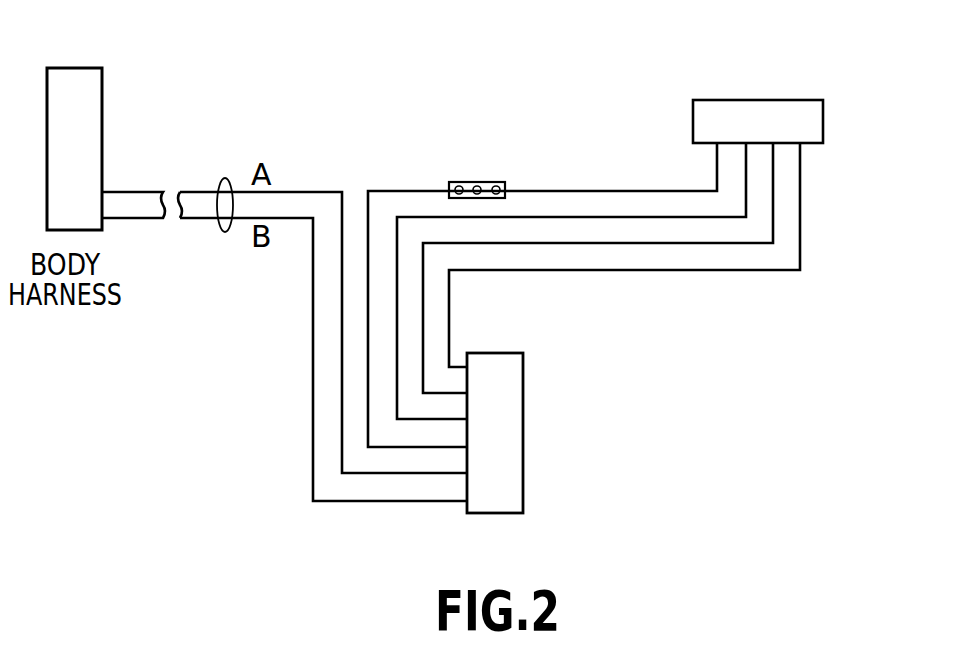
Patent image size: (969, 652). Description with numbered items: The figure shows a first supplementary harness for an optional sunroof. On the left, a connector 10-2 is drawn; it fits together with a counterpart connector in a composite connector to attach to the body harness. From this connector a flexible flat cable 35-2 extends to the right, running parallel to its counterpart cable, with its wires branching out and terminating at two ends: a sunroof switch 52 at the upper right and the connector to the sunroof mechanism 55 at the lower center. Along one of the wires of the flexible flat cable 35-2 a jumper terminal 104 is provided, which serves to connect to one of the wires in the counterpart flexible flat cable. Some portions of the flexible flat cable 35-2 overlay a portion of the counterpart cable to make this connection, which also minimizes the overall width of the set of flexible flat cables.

The connector 10-2 is at (103, 97).
The flexible flat cable 35-2 is at (226, 181).
The jumper terminal 104 is at (482, 182).
The sunroof switch 52 is at (823, 119).
The sunroof mechanism 55 is at (523, 427).